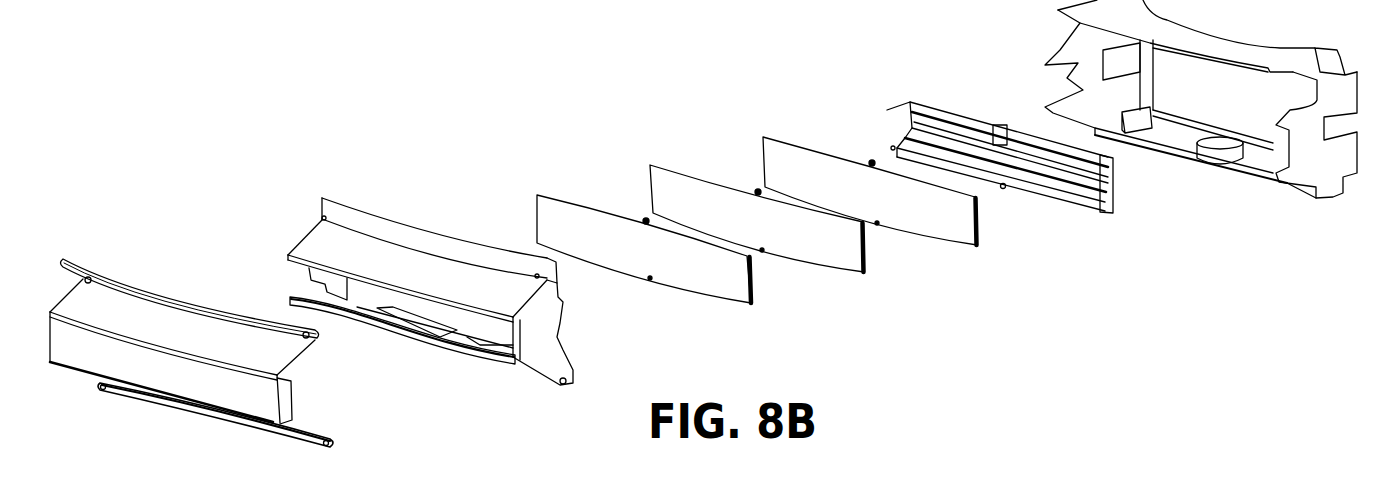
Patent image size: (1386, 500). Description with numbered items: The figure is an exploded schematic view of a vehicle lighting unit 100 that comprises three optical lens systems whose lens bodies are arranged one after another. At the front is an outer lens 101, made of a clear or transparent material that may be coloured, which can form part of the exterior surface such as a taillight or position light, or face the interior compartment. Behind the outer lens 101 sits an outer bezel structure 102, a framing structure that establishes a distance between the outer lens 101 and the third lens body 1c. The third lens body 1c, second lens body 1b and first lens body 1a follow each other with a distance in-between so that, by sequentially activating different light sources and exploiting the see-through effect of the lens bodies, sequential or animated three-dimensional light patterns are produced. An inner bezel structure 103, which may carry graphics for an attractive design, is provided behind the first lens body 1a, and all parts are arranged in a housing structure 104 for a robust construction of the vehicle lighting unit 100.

The vehicle lighting unit 100 is at (578, 142).
The outer lens 101 is at (155, 372).
The outer bezel structure 102 is at (536, 353).
The third lens body 1c is at (712, 273).
The second lens body 1b is at (825, 245).
The first lens body 1a is at (938, 217).
The inner bezel structure 103 is at (1087, 188).
The housing structure 104 is at (1317, 157).